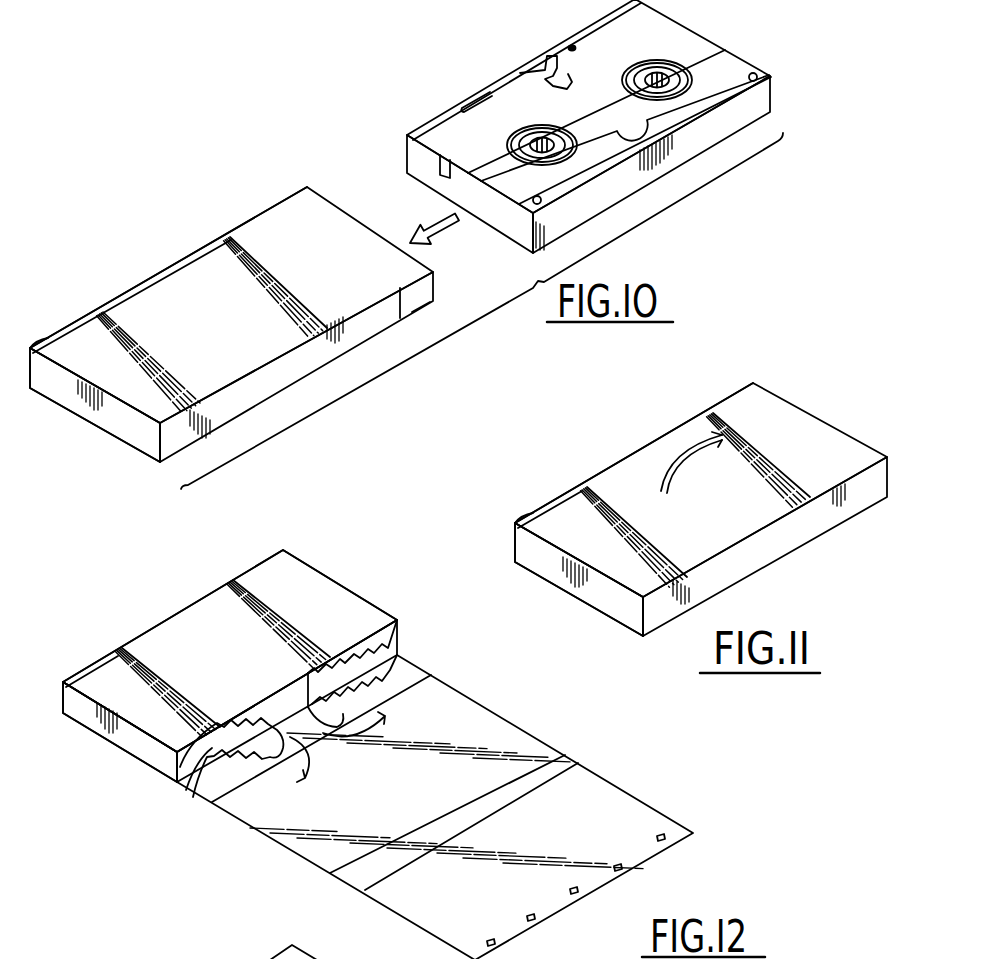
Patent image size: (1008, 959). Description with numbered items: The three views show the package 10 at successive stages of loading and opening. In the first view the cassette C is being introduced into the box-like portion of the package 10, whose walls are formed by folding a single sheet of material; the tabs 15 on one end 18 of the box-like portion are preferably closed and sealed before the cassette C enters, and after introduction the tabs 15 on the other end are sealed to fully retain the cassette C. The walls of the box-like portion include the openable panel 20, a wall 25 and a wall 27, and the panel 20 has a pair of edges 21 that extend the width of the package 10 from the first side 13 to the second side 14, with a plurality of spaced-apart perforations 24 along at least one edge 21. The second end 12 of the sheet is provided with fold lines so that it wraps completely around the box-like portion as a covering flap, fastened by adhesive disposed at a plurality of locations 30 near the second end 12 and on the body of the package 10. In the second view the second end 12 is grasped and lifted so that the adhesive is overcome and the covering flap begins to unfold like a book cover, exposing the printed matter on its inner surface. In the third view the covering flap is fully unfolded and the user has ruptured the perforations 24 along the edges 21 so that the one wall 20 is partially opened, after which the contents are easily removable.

In FIG. 10, the package 10 is at (188, 177).
In FIG. 11, the package 10 is at (864, 372).
In FIG. 12, the package 10 is at (389, 576).
In FIG. 10, the second end 12 is at (192, 255).
In FIG. 11, the second end 12 is at (680, 427).
In FIG. 12, the second end 12 is at (660, 845).
In FIG. 12, the first side 13 is at (503, 720).
In FIG. 12, the second side 14 is at (282, 852).
In FIG. 10, the tabs 15 is at (408, 288).
In FIG. 10, the one end 18 is at (123, 433).
In FIG. 11, the one end 18 is at (610, 603).
In FIG. 12, the one end 18 is at (107, 743).
In FIG. 12, the panel 20 is at (394, 642).
In FIG. 10, the edges 21 is at (230, 234).
In FIG. 12, the perforations 24 is at (340, 660).
In FIG. 12, the wall 25 is at (163, 627).
In FIG. 10, the wall 27 is at (40, 346).
In FIG. 11, the wall 27 is at (523, 523).
In FIG. 12, the locations 30 is at (500, 951).
In FIG. 10, the cassette C is at (768, 113).
In FIG. 12, the cassette C is at (296, 688).